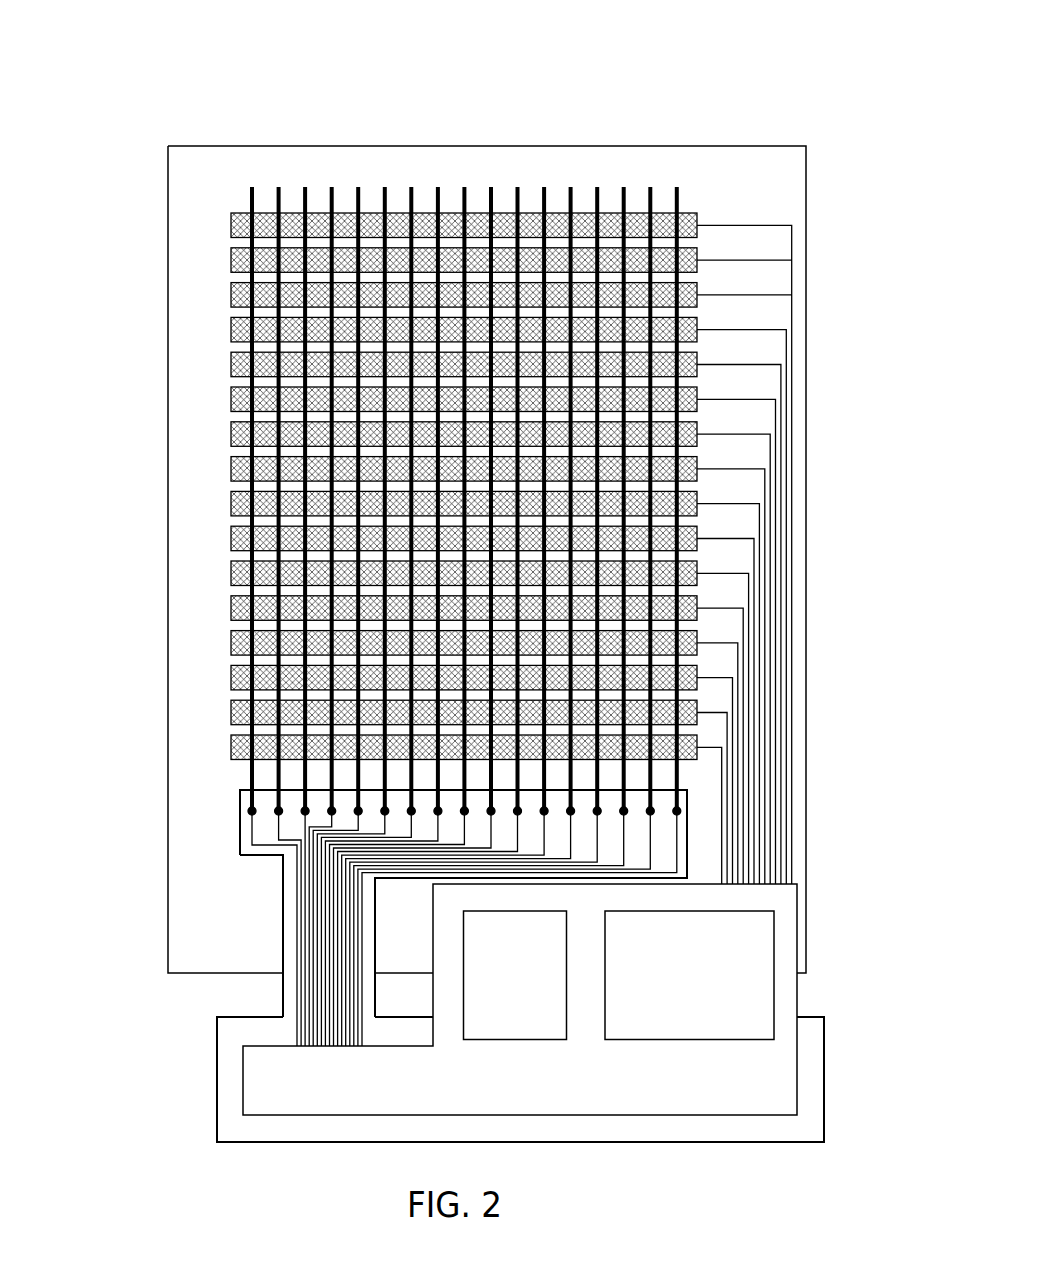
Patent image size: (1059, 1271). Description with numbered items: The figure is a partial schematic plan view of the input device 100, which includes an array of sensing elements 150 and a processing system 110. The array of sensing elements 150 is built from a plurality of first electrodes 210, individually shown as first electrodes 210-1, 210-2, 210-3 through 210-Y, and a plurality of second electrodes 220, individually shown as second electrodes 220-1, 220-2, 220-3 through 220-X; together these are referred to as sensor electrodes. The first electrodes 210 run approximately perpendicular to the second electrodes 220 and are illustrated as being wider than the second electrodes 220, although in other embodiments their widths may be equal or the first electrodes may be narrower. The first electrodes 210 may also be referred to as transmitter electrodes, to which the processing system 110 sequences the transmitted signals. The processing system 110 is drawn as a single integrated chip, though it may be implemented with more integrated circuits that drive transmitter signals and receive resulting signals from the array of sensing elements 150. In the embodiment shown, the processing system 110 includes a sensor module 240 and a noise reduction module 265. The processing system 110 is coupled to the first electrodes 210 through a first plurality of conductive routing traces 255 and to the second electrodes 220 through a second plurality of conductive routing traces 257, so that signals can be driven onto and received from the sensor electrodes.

The input device 100 is at (197, 118).
The processing system 110 is at (742, 1093).
The array of sensing elements 150 is at (369, 194).
The first electrodes 210 is at (143, 770).
The first electrode 210-1 is at (231, 221).
The first electrode 210-2 is at (231, 257).
The first electrode 210-3 is at (231, 293).
The first electrode 210-Y is at (231, 753).
The second electrodes 220 is at (685, 155).
The second electrode 220-1 is at (251, 192).
The second electrode 220-2 is at (278, 192).
The second electrode 220-3 is at (305, 193).
The second electrode 220-X is at (678, 193).
The sensor module 240 is at (712, 1008).
The first plurality of conductive routing traces 255 is at (293, 1000).
The second plurality of conductive routing traces 257 is at (800, 722).
The noise reduction module 265 is at (533, 1024).